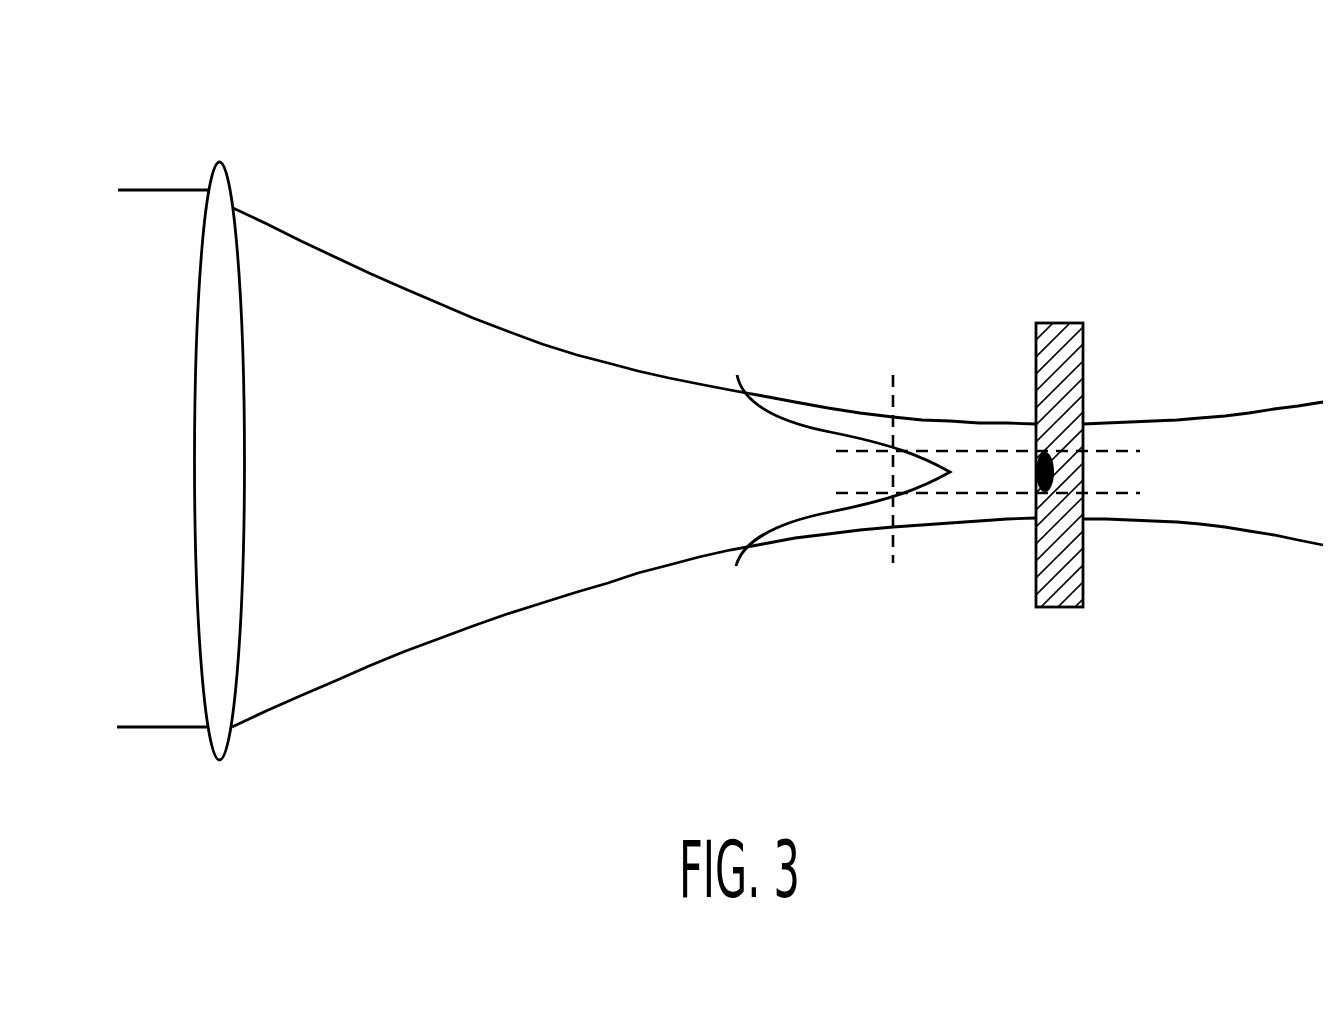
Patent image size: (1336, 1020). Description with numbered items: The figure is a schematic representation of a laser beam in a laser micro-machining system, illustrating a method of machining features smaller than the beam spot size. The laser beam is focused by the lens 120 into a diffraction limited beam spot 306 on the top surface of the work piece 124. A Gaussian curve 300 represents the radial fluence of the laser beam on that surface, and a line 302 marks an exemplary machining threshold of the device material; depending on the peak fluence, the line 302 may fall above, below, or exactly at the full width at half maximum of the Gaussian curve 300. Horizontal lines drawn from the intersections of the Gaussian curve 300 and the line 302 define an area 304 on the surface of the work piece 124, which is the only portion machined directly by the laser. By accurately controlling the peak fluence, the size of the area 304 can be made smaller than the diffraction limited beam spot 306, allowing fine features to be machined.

The lens 120 is at (211, 186).
The work piece 124 is at (1077, 572).
The Gaussian curve 300 is at (798, 517).
The line 302 is at (892, 398).
The area 304 is at (1038, 474).
The diffraction limited beam spot 306 is at (1176, 425).